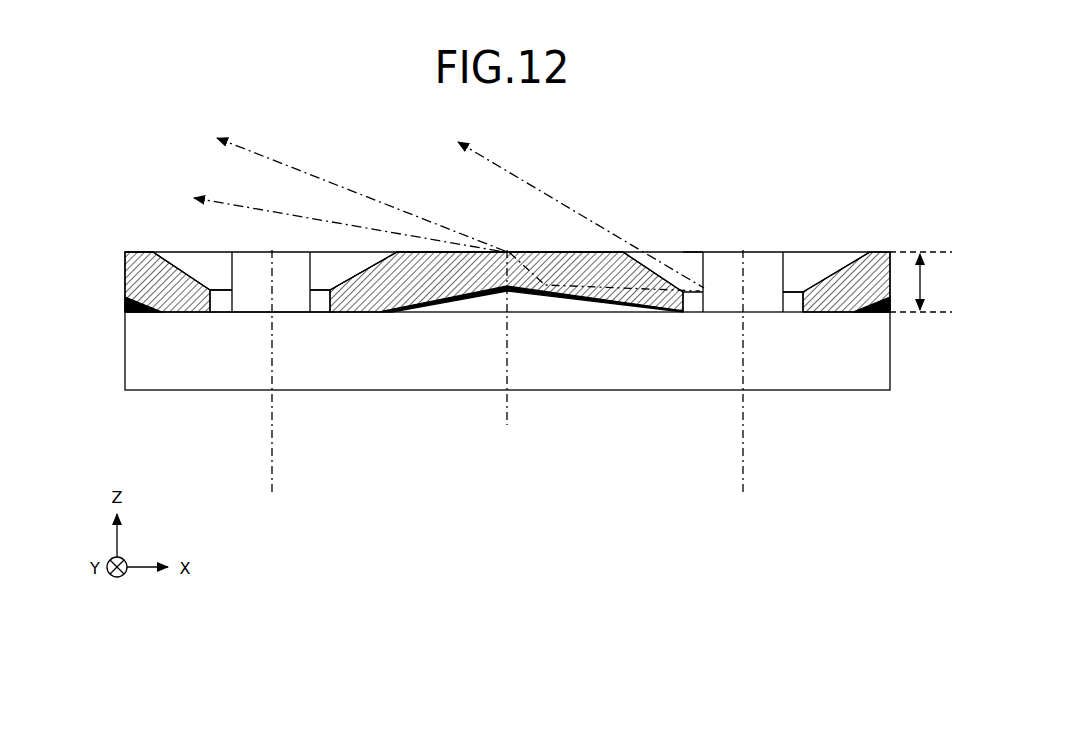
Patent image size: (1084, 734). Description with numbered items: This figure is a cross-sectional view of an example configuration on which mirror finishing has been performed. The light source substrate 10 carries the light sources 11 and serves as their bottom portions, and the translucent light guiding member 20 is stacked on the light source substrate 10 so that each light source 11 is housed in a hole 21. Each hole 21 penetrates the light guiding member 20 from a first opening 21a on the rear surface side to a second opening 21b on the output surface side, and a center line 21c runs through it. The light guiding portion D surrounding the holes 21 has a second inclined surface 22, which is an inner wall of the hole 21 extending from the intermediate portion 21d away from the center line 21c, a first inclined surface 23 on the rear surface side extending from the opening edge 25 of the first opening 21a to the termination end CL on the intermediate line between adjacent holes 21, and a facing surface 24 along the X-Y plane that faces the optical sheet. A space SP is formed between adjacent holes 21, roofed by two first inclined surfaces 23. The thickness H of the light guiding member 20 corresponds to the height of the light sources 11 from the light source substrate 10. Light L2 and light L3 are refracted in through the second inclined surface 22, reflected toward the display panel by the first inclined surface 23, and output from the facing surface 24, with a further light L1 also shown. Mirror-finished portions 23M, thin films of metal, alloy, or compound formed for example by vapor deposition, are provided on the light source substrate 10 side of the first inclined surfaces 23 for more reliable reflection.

The light source substrate 10 is at (880, 378).
The light source 11 is at (287, 303).
The light guiding member 20 is at (110, 265).
The hole 21 is at (313, 303).
The first opening 21a is at (228, 300).
The second opening 21b is at (163, 250).
The center line 21c is at (507, 386).
The intermediate portion 21d is at (327, 289).
The second inclined surface 22 is at (180, 270).
The first inclined surface 23 is at (127, 318).
The mirror-finished portion 23M is at (123, 313).
The facing surface 24 is at (535, 252).
The opening edge 25 is at (210, 313).
The termination end CL is at (507, 350).
The light guiding portion D is at (420, 313).
The space SP is at (490, 303).
The thickness H is at (921, 282).
The light ray L1 is at (565, 209).
The light L2 is at (432, 240).
The light L3 is at (346, 190).